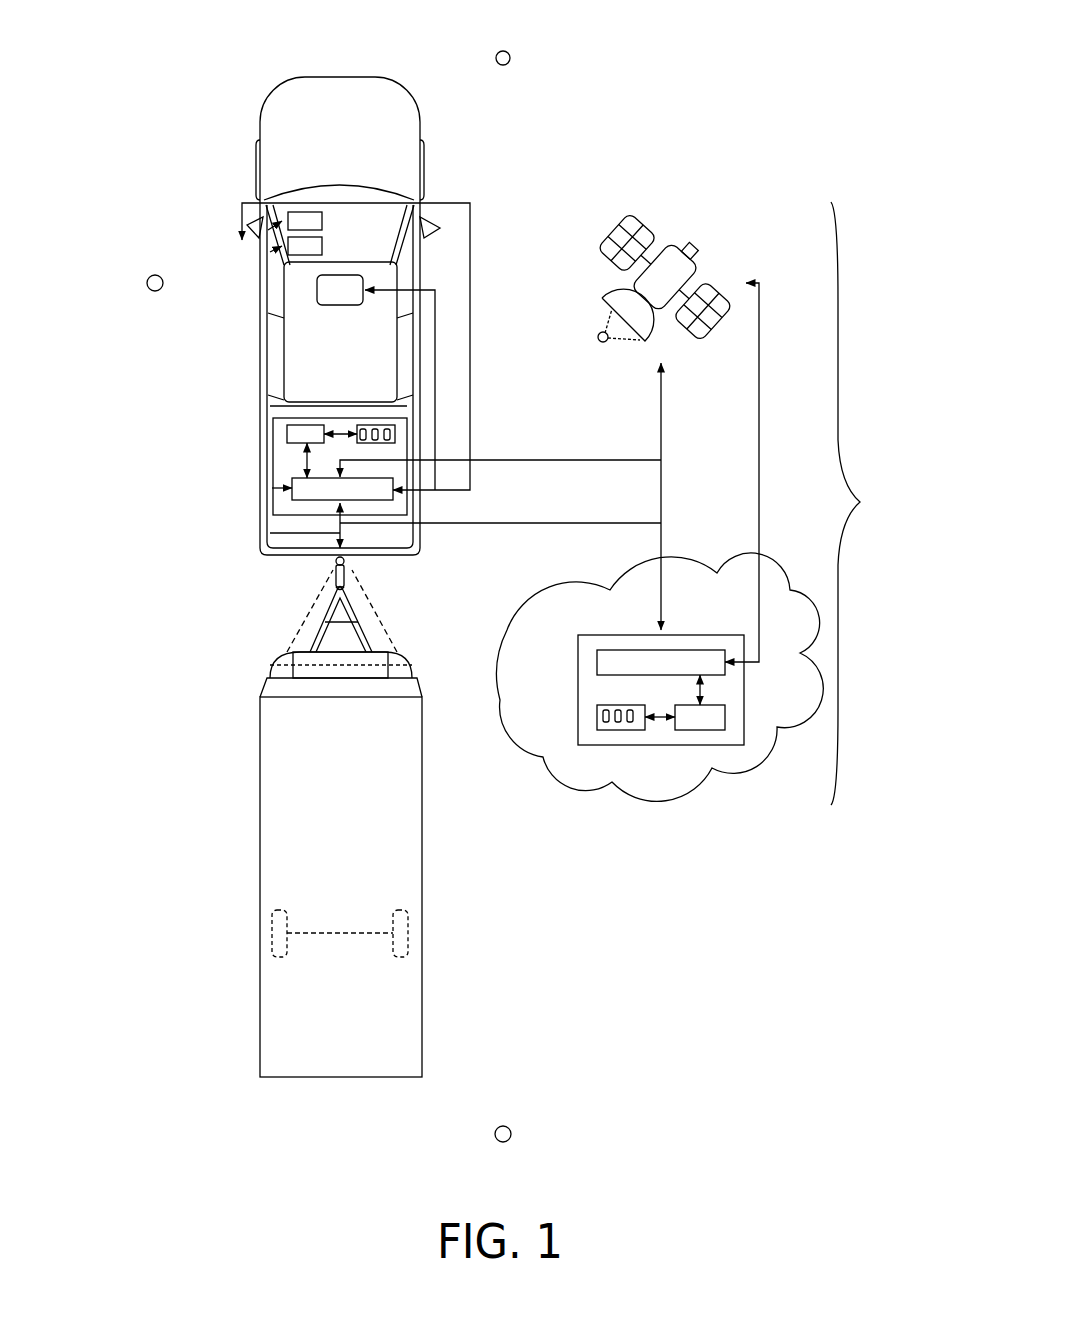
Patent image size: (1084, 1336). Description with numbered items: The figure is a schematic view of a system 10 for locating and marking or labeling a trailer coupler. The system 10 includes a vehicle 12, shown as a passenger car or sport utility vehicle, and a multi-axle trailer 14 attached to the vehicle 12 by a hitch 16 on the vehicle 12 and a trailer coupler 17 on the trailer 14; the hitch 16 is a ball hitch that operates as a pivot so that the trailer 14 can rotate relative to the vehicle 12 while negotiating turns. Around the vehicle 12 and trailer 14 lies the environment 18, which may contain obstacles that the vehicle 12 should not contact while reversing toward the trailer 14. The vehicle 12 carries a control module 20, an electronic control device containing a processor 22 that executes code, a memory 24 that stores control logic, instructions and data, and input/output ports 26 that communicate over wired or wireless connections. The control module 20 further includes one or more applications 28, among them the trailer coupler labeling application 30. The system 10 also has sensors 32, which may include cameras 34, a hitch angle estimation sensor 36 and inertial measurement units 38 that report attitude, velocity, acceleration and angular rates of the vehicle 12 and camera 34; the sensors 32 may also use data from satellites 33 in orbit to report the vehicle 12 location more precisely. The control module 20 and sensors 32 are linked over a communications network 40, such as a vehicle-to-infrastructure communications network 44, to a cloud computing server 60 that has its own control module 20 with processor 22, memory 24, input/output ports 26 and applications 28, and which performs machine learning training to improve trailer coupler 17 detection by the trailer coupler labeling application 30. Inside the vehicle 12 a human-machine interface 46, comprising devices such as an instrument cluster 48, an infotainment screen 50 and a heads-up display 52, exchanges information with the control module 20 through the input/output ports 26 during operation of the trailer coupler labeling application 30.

The system 10 is at (132, 66).
The vehicle 12 is at (408, 90).
The trailer 14 is at (422, 972).
The hitch 16 is at (336, 566).
The trailer coupler 17 is at (331, 585).
The environment 18 is at (510, 56).
The control module 20 is at (291, 427).
The processor 22 is at (278, 443).
The memory 24 is at (479, 608).
The input/output ports 26 is at (290, 500).
The application 28 is at (473, 608).
The trailer coupler labeling application 30 is at (395, 433).
The sensors 32 is at (326, 401).
The satellites 33 is at (676, 240).
The camera 34 is at (326, 401).
The hitch angle estimation sensor 36 is at (430, 577).
The inertial measurement unit 38 is at (347, 563).
The communications network 40 is at (879, 503).
The vehicle-to-infrastructure communications network 44 is at (879, 503).
The human-machine interface 46 is at (431, 158).
The instrument cluster 48 is at (322, 246).
The infotainment screen 50 is at (364, 278).
The heads-up display 52 is at (308, 212).
The cloud computing server 60 is at (663, 803).